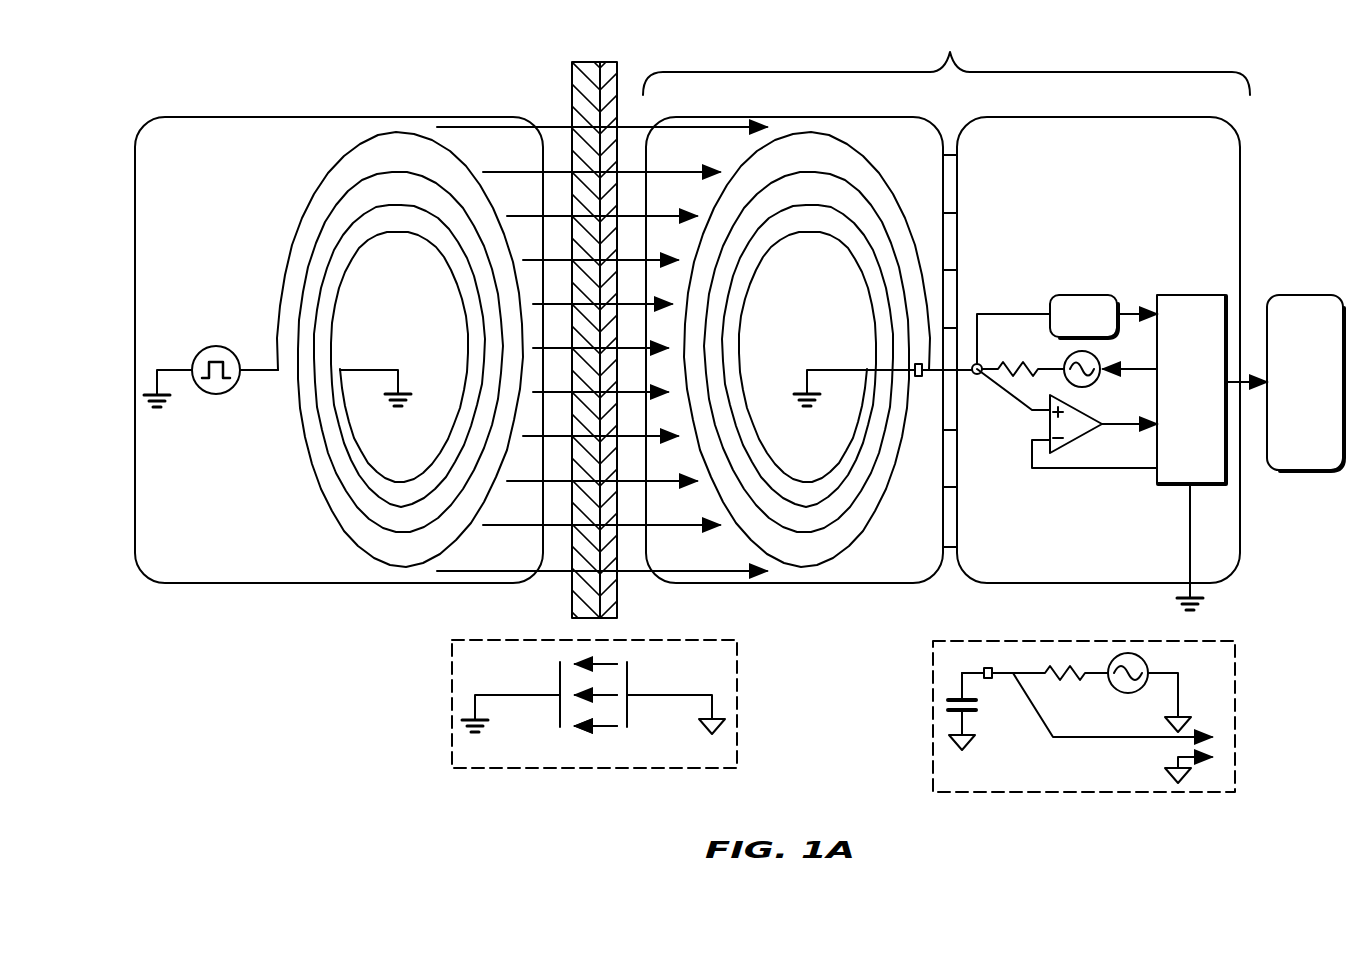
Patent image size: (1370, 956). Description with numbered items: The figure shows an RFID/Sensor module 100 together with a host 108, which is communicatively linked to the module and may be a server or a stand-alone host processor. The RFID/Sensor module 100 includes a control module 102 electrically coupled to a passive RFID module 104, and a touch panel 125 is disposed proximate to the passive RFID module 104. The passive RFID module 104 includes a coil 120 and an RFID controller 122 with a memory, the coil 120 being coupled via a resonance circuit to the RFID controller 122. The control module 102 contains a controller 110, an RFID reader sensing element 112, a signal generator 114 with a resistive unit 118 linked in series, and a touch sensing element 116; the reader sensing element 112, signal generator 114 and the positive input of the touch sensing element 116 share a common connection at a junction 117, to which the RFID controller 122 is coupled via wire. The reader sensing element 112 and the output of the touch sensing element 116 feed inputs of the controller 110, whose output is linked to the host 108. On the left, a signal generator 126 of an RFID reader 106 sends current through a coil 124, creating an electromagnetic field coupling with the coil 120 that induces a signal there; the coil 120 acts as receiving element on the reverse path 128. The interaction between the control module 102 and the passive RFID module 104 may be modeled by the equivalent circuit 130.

The RFID/Sensor module 100 is at (946, 60).
The control module 102 is at (1108, 583).
The passive RFID module 104 is at (805, 583).
The RFID reader 106 is at (340, 583).
The host 108 is at (1306, 295).
The controller 110 is at (1192, 295).
The RFID reader sensing element 112 is at (1083, 295).
The signal generator 114 is at (1094, 385).
The touch sensing element 116 is at (1080, 441).
The junction 117 is at (980, 381).
The resistive unit 118 is at (1018, 358).
The coil 120 is at (860, 135).
The RFID controller 122 is at (920, 377).
The coil 124 is at (296, 194).
The touch panel 125 is at (572, 89).
The signal generator 126 is at (216, 346).
The reverse path 128 is at (737, 703).
The equivalent circuit 130 is at (1235, 716).